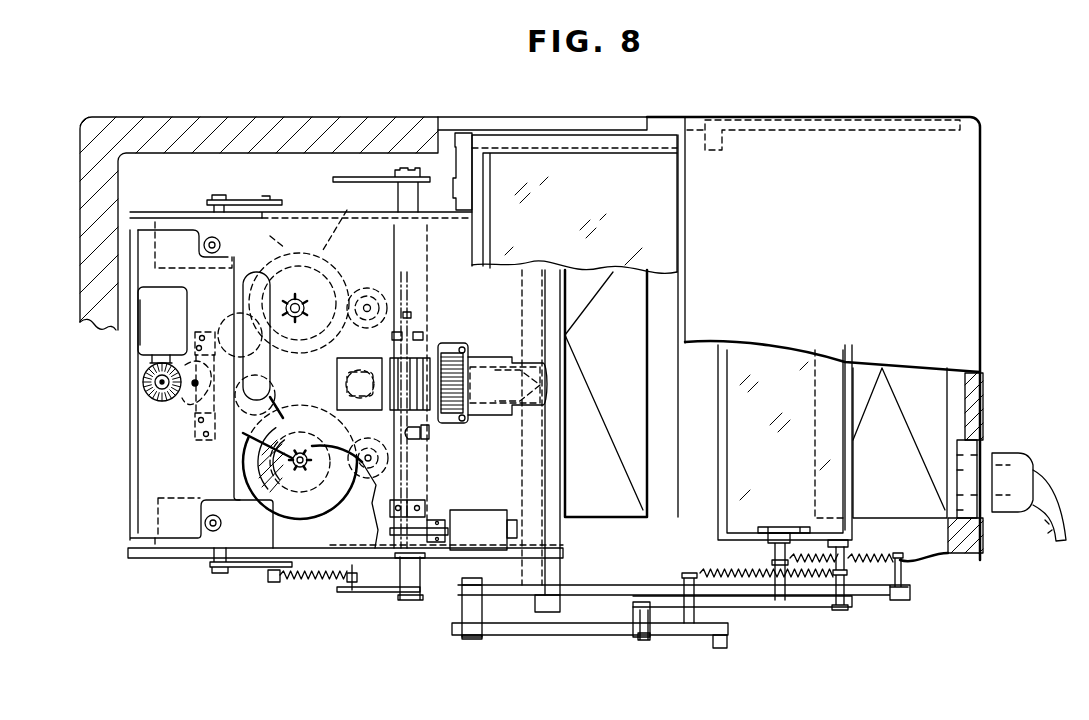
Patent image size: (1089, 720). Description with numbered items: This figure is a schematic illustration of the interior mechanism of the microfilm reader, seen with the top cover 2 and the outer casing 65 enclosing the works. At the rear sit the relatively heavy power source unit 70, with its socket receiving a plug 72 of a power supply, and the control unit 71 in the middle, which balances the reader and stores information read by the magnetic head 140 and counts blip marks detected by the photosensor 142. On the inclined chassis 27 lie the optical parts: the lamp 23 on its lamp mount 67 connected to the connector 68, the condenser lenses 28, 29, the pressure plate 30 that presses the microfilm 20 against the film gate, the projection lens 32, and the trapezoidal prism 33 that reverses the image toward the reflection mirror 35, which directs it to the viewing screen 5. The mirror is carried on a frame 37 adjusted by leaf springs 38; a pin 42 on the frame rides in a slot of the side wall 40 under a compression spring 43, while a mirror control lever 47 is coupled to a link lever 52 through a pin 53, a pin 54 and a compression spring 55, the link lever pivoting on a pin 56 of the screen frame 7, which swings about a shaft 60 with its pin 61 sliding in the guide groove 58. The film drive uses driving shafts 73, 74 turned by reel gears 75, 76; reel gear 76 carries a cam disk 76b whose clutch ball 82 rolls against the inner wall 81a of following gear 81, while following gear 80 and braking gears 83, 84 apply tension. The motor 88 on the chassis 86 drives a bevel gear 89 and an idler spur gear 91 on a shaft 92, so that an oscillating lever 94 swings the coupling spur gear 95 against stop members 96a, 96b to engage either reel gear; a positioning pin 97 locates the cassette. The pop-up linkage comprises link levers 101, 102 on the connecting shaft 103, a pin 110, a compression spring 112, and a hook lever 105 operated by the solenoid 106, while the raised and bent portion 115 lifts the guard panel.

The top cover 2 is at (975, 223).
The viewing screen 5 is at (568, 162).
The screen frame 7 is at (523, 130).
The microfilm 20 is at (407, 280).
The lamp 23 is at (408, 333).
The chassis 27 is at (305, 227).
The condenser lens 28 is at (368, 446).
The condenser lens 29 is at (403, 410).
The pressure plate 30 is at (433, 338).
The projection lens 32 is at (483, 340).
The trapezoidal prism 33 is at (509, 340).
The reflection mirror 35 is at (773, 340).
The frame 37 is at (852, 440).
The leaf spring 38 is at (772, 527).
The side wall 40 is at (603, 585).
The pin 42 is at (772, 557).
The compression spring 43 is at (880, 556).
The mirror control lever 47 is at (755, 602).
The link lever 52 is at (668, 615).
The pin 53 is at (690, 630).
The pin 54 is at (840, 612).
The compression spring 55 is at (807, 581).
The pin 56 is at (643, 643).
The guide groove 58 is at (885, 120).
The shaft 60 is at (462, 610).
The pin 61 is at (713, 118).
The outer casing 65 is at (301, 122).
The lamp mount 67 is at (321, 326).
The connector 68 is at (299, 303).
The power source unit 70 is at (907, 380).
The control unit 71 is at (642, 392).
The plug 72 is at (1028, 460).
The driving shaft 73 is at (298, 298).
The driving shaft 74 is at (308, 462).
The reel gear 75 is at (277, 241).
The reel gear 76 is at (330, 512).
The cam disk 76b is at (273, 463).
The following gear 80 is at (343, 220).
The following gear 81 is at (260, 487).
The inner wall 81a is at (300, 453).
The clutch ball 82 is at (287, 486).
The braking gear 83 is at (372, 287).
The braking gear 84 is at (367, 477).
The chassis 86 is at (148, 460).
The motor 88 is at (140, 342).
The bevel gear 89 is at (145, 392).
The idler spur gear 91 is at (176, 400).
The shaft 92 is at (195, 388).
The oscillating lever 94 is at (238, 336).
The coupling spur gear 95 is at (258, 402).
The stop member 96a is at (162, 325).
The stop member 96b is at (212, 399).
The positioning pin 97 is at (207, 238).
The link lever 101 is at (363, 177).
The link lever 102 is at (252, 200).
The connecting shaft 103 is at (400, 570).
The hook lever 105 is at (413, 540).
The solenoid 106 is at (488, 513).
The pin 110 is at (220, 573).
The compression spring 112 is at (303, 582).
The raised and bent portion 115 is at (410, 498).
The magnetic head 140 is at (418, 446).
The photosensor 142 is at (413, 315).